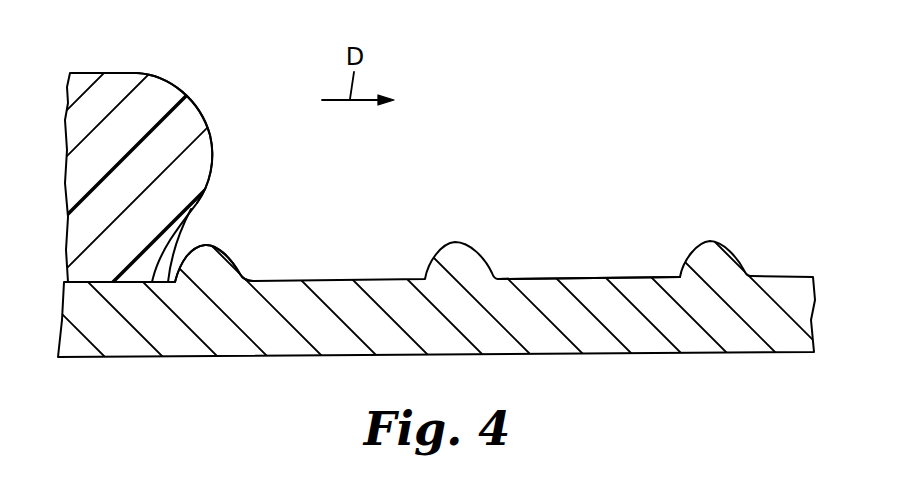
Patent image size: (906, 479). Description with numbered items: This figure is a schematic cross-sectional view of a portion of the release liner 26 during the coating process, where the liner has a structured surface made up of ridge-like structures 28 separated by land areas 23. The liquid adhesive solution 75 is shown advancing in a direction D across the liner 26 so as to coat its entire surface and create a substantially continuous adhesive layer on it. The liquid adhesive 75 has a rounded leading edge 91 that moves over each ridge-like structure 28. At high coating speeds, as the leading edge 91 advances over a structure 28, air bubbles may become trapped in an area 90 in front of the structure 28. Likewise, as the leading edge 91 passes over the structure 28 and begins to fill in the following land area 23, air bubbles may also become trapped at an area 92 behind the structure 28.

The liquid adhesive solution 75 is at (104, 88).
The leading edge 91 is at (202, 114).
The ridge-like structure 28 is at (222, 251).
The area behind the structure 92 is at (248, 273).
The land area 23 is at (555, 278).
The release liner 26 is at (765, 261).
The area in front of the structure 90 is at (168, 277).